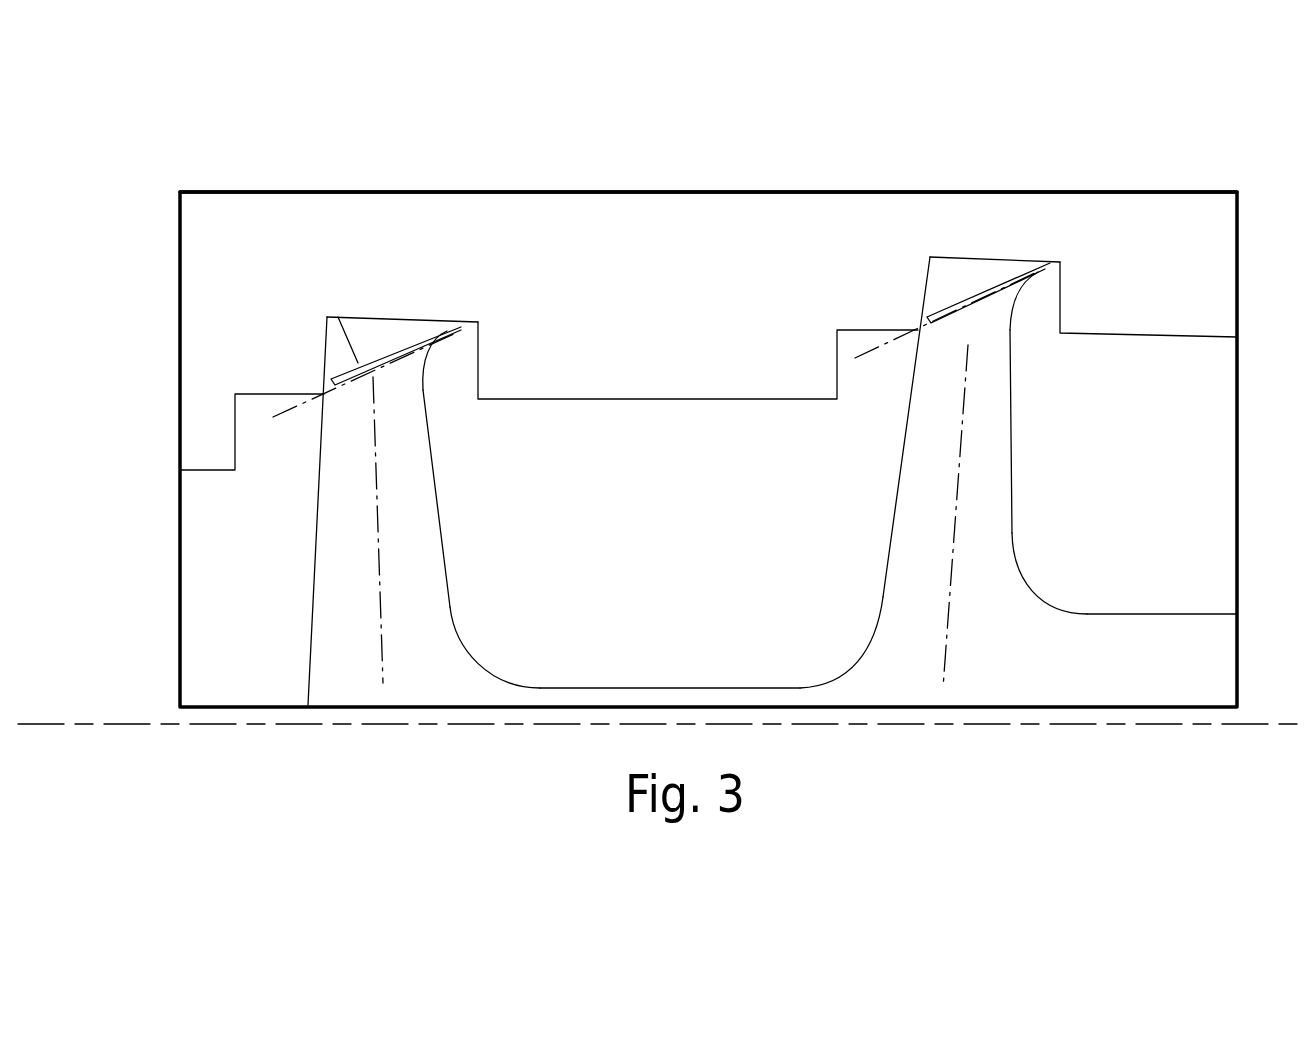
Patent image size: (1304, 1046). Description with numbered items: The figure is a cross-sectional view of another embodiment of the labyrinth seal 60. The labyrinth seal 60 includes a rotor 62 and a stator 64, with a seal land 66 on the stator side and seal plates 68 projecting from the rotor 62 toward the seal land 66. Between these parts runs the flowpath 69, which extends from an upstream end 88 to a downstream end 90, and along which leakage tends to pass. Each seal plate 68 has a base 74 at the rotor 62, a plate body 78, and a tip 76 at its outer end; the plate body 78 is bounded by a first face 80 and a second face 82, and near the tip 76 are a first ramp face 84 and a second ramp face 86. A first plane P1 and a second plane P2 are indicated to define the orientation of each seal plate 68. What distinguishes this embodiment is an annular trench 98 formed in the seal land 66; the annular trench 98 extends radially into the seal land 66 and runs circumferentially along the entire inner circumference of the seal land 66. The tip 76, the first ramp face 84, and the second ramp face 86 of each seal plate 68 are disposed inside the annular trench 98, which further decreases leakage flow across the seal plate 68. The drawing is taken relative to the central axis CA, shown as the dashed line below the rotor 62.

The labyrinth seal 60 is at (163, 503).
The rotor 62 is at (1203, 662).
The stator 64 is at (218, 221).
The seal land 66 is at (449, 280).
The seal plate 68 is at (671, 481).
The flowpath 69 is at (622, 508).
The base 74 is at (457, 687).
The tip 76 is at (470, 327).
The plate body 78 is at (423, 615).
The first face 80 is at (438, 501).
The second face 82 is at (317, 557).
The first ramp face 84 is at (433, 353).
The second ramp face 86 is at (336, 383).
The upstream end 88 is at (1134, 477).
The downstream end 90 is at (207, 590).
The annular trench 98 is at (370, 337).
The first plane P1 is at (382, 652).
The second plane P2 is at (334, 384).
The central axis CA is at (55, 724).